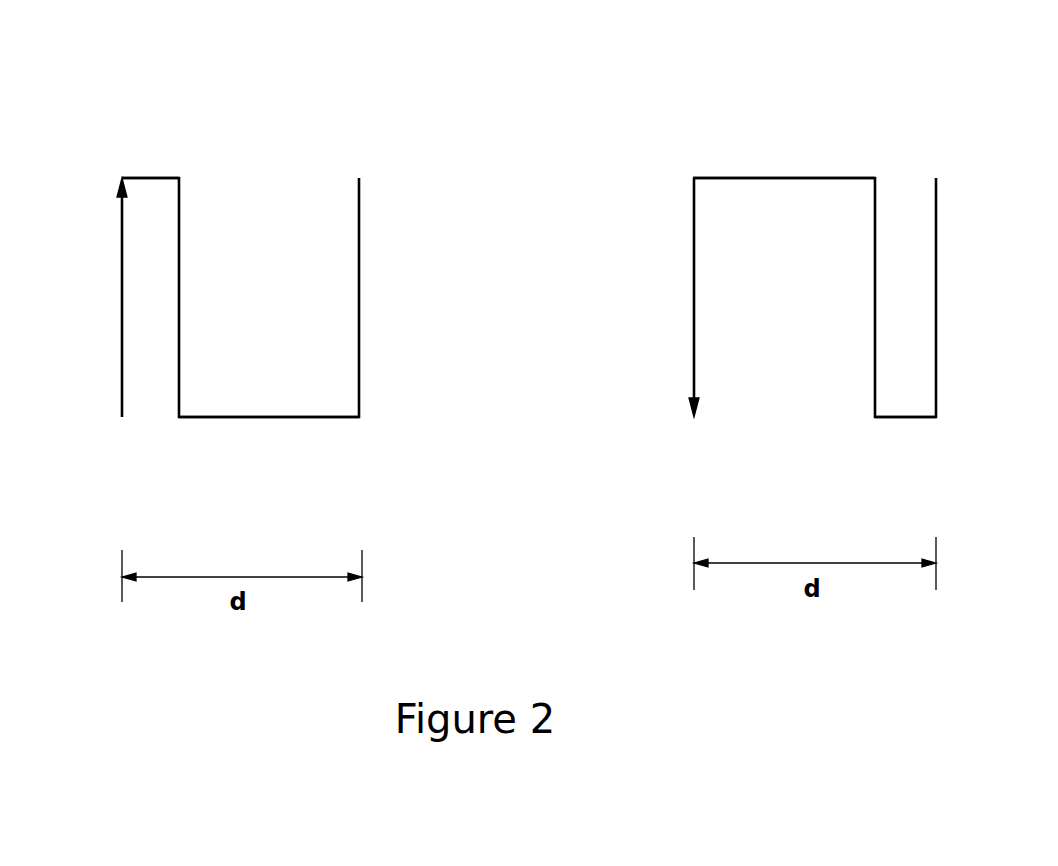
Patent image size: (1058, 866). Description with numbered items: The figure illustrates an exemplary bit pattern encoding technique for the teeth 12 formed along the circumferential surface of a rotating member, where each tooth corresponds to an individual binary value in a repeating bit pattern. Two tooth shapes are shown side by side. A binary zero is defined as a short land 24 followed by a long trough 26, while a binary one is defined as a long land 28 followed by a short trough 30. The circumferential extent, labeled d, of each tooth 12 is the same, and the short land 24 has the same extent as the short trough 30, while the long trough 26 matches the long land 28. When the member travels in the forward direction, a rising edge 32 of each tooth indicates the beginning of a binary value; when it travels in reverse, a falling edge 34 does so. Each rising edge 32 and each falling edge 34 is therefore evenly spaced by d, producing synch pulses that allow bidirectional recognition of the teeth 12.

The teeth 12 is at (154, 126).
The short land 24 is at (160, 178).
The long trough 26 is at (280, 417).
The long land 28 is at (773, 178).
The short trough 30 is at (907, 417).
The rising edge 32 is at (116, 323).
The falling edge 34 is at (692, 325).